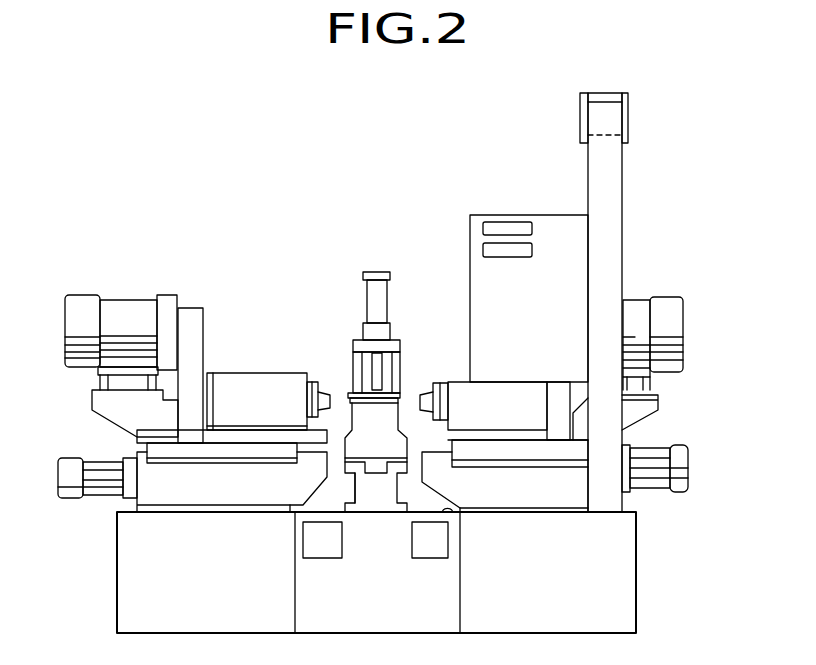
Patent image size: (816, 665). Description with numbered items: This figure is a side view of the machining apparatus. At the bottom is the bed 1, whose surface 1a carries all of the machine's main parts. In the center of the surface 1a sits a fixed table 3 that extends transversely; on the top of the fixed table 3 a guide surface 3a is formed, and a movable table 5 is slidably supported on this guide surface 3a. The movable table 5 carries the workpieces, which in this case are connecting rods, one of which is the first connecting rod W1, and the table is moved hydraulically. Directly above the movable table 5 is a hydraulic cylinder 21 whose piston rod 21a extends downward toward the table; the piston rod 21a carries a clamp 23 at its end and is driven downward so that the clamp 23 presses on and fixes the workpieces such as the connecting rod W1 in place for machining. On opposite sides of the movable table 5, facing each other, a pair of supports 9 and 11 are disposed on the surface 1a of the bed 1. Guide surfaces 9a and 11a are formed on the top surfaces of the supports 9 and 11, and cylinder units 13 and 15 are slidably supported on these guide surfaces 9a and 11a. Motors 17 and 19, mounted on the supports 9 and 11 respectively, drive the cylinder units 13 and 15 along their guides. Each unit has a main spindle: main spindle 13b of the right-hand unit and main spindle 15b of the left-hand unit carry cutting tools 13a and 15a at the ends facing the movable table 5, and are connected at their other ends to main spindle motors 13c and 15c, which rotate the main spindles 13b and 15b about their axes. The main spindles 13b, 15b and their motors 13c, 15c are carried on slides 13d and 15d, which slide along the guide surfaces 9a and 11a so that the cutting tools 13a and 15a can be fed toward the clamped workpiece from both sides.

The bed 1 is at (620, 598).
The surface of the bed 1a is at (458, 513).
The fixed table 3 is at (382, 502).
The guide surface 3a is at (368, 465).
The movable table 5 is at (388, 403).
The support 9 is at (545, 495).
The guide surface 9a is at (418, 445).
The support 11 is at (226, 498).
The guide surface 11a is at (300, 445).
The cylinder unit 13 is at (464, 390).
The cutting tool 13a is at (425, 390).
The main spindle 13b is at (447, 407).
The main spindle motor 13c is at (665, 302).
The slide 13d is at (590, 452).
The cylinder unit 15 is at (222, 360).
The cutting tool 15a is at (320, 390).
The main spindle 15b is at (300, 375).
The main spindle motor 15c is at (88, 302).
The slide 15d is at (175, 450).
The motor 17 is at (688, 448).
The motor 19 is at (73, 460).
The hydraulic cylinder 21 is at (383, 288).
The piston rod 21a is at (377, 333).
The clamp 23 is at (358, 392).
The first connecting rod W1 is at (345, 402).